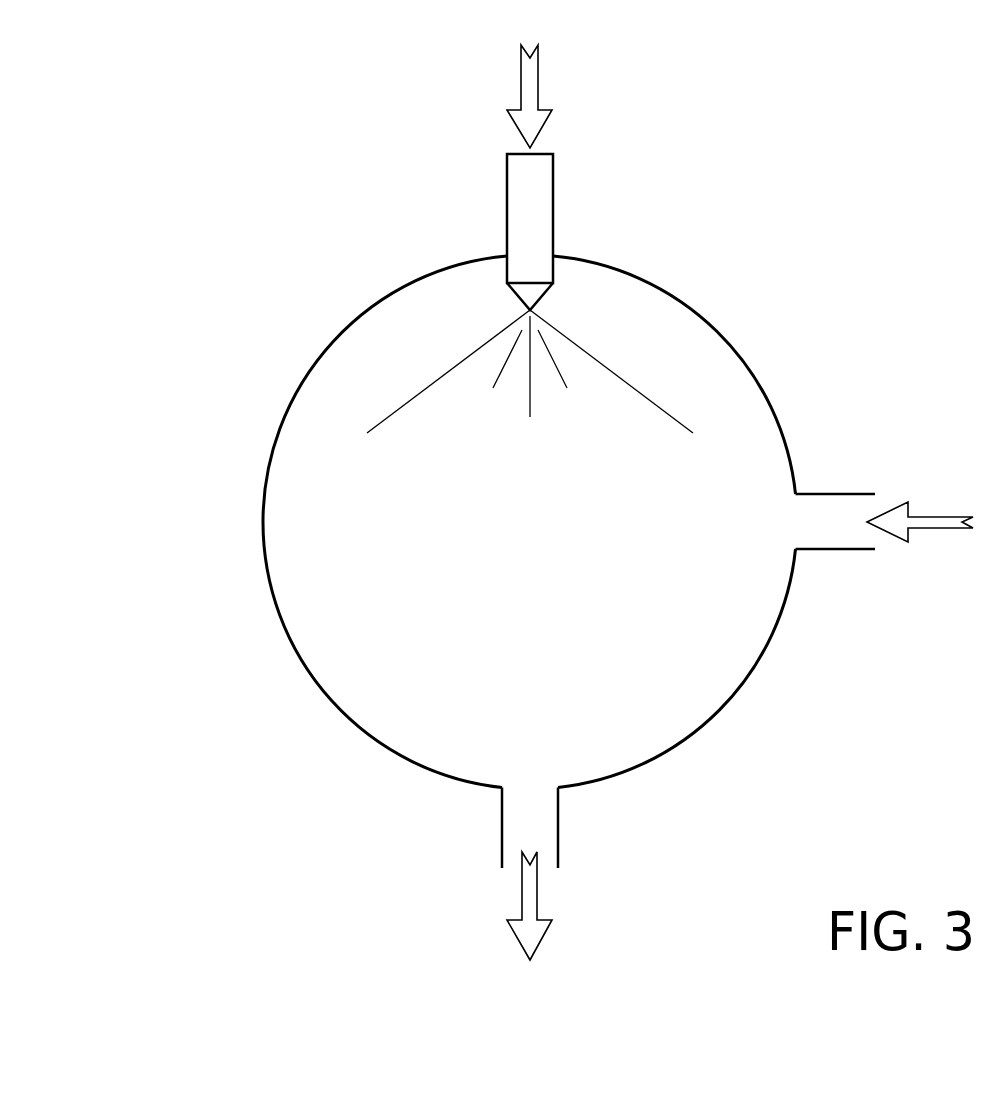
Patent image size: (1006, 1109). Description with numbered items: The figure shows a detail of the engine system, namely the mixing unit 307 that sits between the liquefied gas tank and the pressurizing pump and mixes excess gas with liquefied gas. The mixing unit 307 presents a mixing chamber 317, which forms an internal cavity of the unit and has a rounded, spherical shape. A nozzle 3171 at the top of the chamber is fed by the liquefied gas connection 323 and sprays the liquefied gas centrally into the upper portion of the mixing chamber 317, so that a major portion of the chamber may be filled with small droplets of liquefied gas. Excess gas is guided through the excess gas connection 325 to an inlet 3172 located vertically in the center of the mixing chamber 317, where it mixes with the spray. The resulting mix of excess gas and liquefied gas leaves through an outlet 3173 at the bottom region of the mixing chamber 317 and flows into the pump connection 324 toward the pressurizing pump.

The mixing unit 307 is at (280, 627).
The mixing chamber 317 is at (357, 538).
The liquefied gas connection 323 is at (507, 200).
The nozzle 3171 is at (510, 298).
The excess gas connection 325 is at (835, 494).
The inlet 3172 is at (800, 520).
The pump connection 324 is at (502, 830).
The outlet 3173 is at (531, 790).